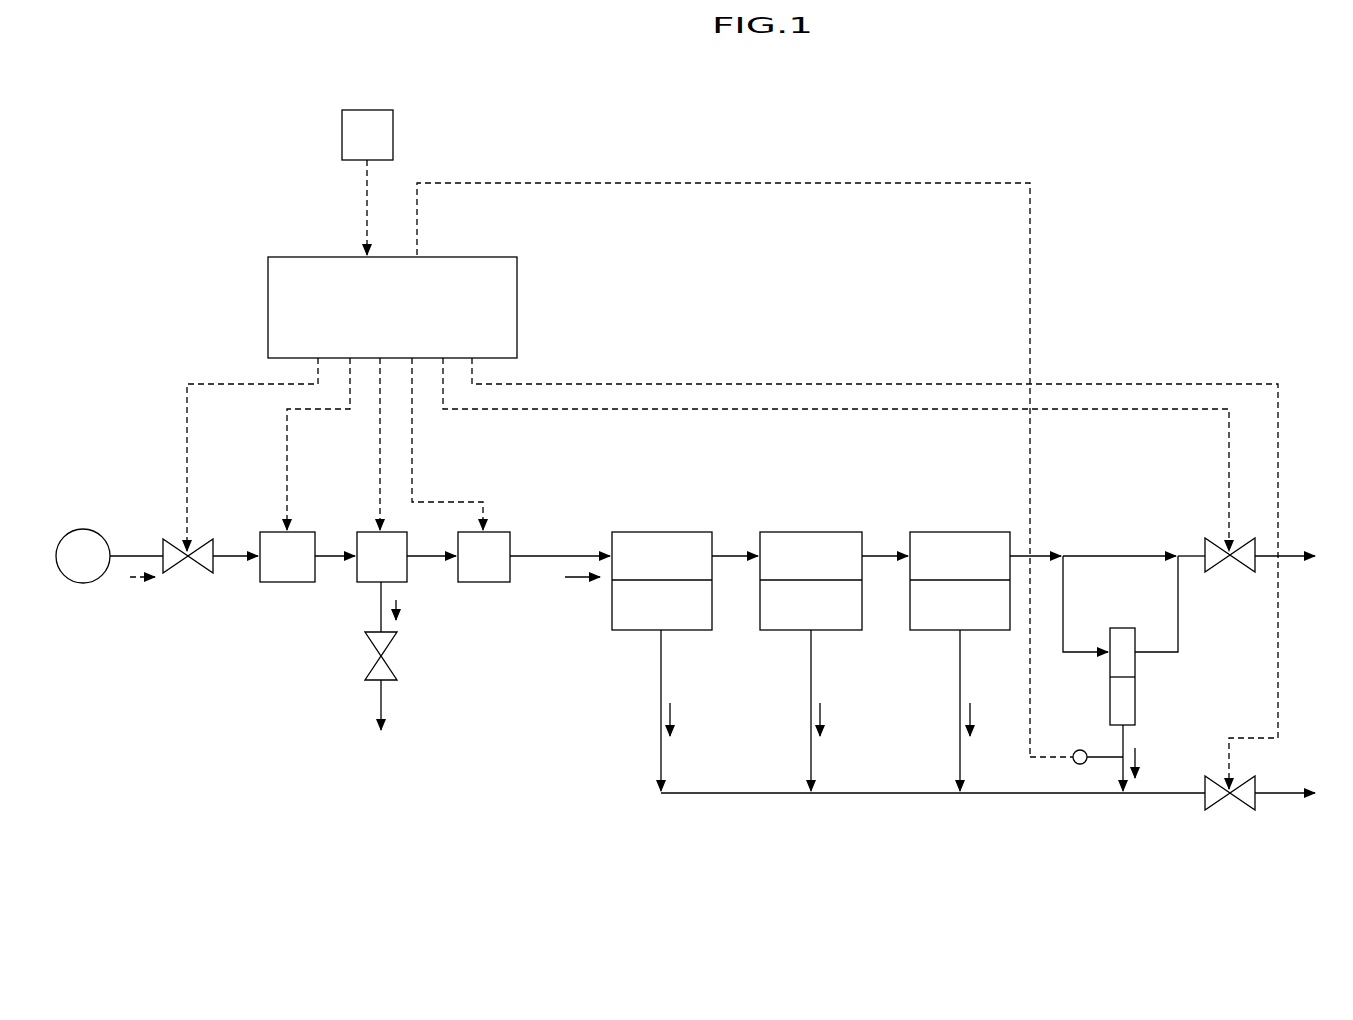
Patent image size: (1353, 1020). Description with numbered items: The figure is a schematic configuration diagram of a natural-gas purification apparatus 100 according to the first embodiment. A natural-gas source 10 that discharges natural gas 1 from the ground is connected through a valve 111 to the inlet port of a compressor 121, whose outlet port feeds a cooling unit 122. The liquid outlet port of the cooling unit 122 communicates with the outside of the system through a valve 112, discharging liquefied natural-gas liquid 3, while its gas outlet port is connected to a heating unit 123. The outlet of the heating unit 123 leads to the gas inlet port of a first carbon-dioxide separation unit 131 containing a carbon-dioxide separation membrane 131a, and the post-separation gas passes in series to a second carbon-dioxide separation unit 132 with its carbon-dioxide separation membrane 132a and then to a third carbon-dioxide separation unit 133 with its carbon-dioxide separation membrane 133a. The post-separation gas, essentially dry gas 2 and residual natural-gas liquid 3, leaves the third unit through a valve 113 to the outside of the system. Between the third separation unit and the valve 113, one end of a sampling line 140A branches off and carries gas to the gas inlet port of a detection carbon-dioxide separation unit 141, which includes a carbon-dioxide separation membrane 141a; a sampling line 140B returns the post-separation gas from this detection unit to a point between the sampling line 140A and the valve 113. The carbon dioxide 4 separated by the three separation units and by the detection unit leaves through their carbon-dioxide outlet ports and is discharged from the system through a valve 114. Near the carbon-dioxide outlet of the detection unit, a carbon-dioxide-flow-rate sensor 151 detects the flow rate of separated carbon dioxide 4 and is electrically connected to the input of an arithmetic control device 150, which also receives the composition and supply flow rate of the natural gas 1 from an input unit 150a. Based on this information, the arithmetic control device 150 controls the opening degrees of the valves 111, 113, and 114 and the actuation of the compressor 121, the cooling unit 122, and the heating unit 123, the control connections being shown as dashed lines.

The natural-gas purification apparatus 100 is at (720, 156).
The input unit 150a is at (393, 122).
The arithmetic control device 150 is at (517, 283).
The natural-gas source 10 is at (84, 584).
The natural gas 1 is at (88, 545).
The valve 111 is at (208, 575).
The compressor 121 is at (288, 584).
The cooling unit 122 is at (408, 577).
The valve 112 is at (398, 676).
The natural-gas liquid 3 is at (398, 604).
The heating unit 123 is at (500, 530).
The dry gas 2 is at (1335, 537).
The first carbon-dioxide separation unit 131 is at (656, 530).
The carbon-dioxide separation membrane 131a is at (680, 578).
The second carbon-dioxide separation unit 132 is at (800, 530).
The carbon-dioxide separation membrane 132a is at (821, 578).
The third carbon-dioxide separation unit 133 is at (949, 530).
The carbon-dioxide separation membrane 133a is at (971, 578).
The carbon dioxide 4 is at (1168, 770).
The sampling line 140A is at (1066, 596).
The sampling line 140B is at (1178, 606).
The detection carbon-dioxide separation unit 141 is at (1136, 662).
The carbon-dioxide separation membrane 141a is at (1126, 680).
The carbon-dioxide-flow-rate sensor 151 is at (1078, 748).
The valve 113 is at (1250, 538).
The valve 114 is at (1256, 810).